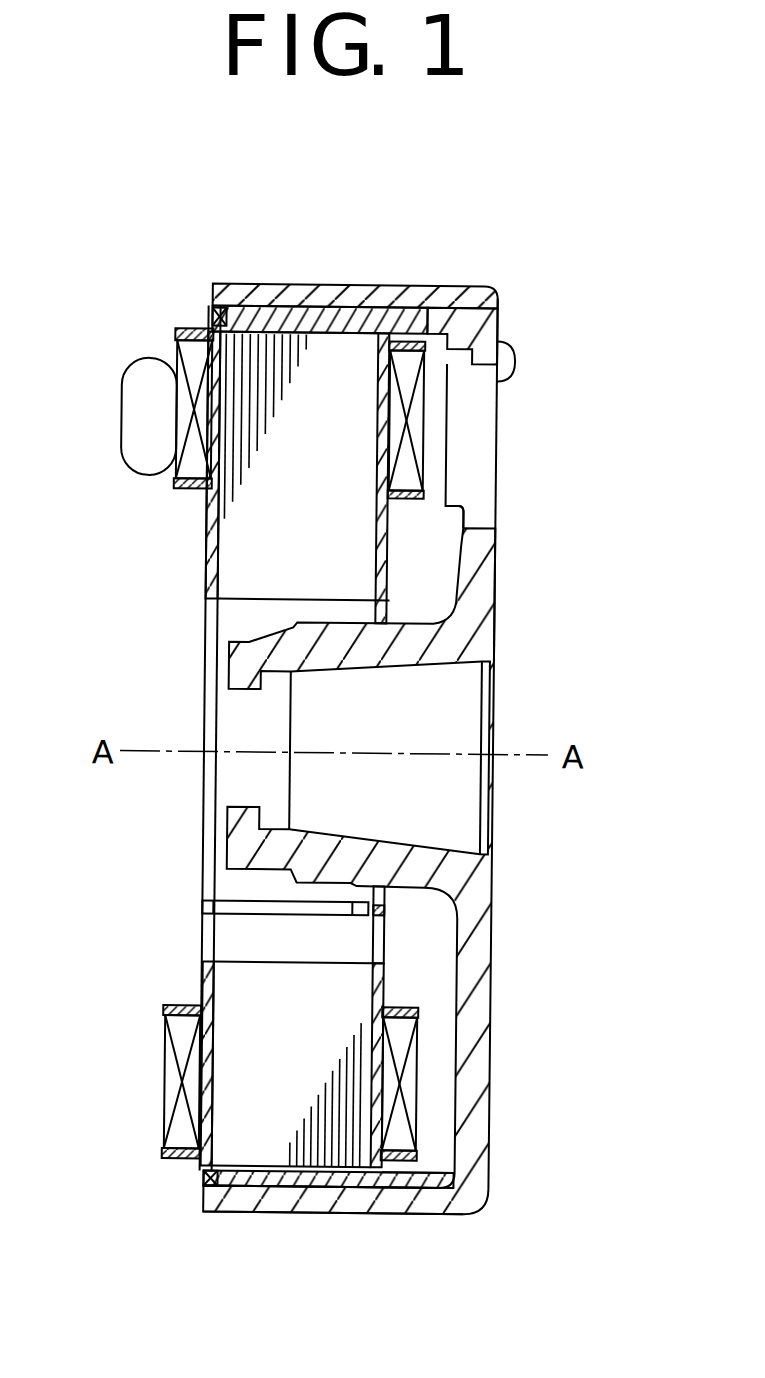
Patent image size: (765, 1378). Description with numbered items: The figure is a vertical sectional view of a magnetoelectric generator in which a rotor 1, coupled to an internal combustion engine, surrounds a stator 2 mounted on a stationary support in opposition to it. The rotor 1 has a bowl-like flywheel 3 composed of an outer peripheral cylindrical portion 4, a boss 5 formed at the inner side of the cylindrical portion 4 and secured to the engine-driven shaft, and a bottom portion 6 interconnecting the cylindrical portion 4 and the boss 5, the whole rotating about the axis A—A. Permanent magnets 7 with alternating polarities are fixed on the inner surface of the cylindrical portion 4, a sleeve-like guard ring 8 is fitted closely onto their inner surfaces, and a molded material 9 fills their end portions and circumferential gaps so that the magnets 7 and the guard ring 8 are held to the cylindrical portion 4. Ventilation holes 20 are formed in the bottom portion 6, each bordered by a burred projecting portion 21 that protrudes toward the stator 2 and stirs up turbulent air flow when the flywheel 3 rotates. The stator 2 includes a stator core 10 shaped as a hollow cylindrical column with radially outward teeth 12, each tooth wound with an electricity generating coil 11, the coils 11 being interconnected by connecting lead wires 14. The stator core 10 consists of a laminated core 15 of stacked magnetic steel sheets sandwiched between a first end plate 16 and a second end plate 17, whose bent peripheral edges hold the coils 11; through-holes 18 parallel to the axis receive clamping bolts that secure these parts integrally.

The rotor 1 is at (494, 575).
The stator 2 is at (203, 983).
The flywheel 3 is at (490, 1008).
The outer peripheral cylindrical portion 4 is at (330, 290).
The boss 5 is at (362, 648).
The bottom portion 6 is at (494, 330).
The permanent magnets 7 is at (380, 315).
The guard ring 8 is at (375, 1180).
The molded material 9 is at (212, 284).
The stator core 10 is at (250, 530).
The electricity generating coils 11 is at (190, 363).
The teeth 12 is at (272, 330).
The connecting lead wires 14 is at (132, 428).
The laminated core 15 is at (272, 572).
The first end plate 16 is at (215, 505).
The second end plate 17 is at (393, 523).
The through-holes 18 is at (262, 915).
The ventilation holes 20 is at (506, 372).
The projecting portion 21 is at (462, 530).